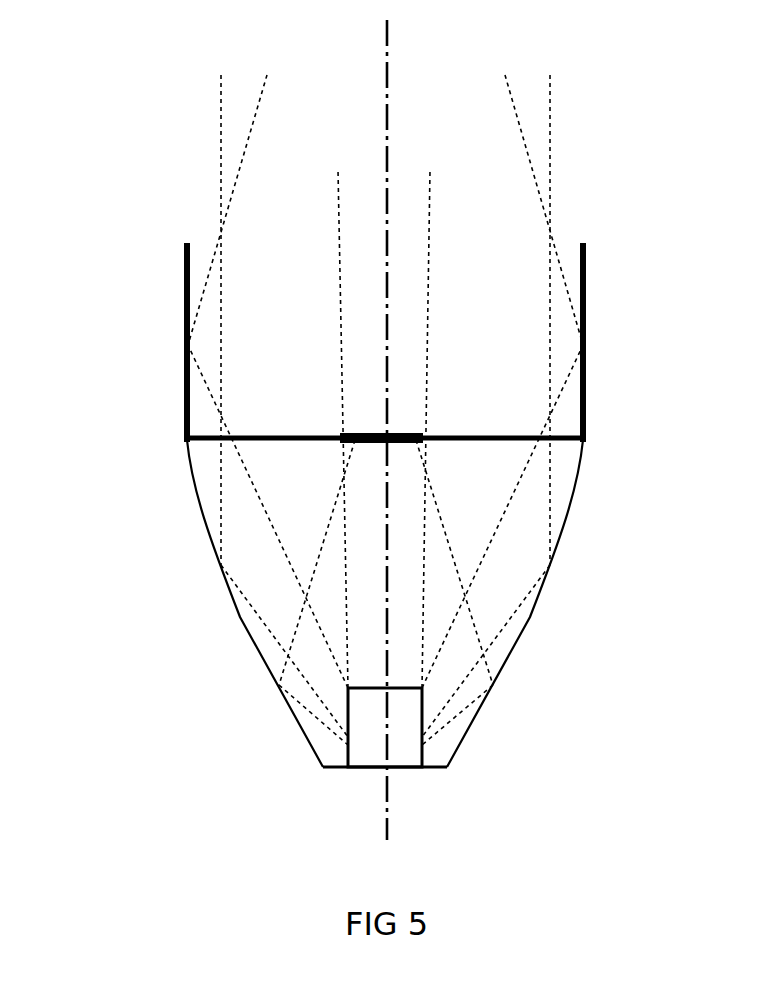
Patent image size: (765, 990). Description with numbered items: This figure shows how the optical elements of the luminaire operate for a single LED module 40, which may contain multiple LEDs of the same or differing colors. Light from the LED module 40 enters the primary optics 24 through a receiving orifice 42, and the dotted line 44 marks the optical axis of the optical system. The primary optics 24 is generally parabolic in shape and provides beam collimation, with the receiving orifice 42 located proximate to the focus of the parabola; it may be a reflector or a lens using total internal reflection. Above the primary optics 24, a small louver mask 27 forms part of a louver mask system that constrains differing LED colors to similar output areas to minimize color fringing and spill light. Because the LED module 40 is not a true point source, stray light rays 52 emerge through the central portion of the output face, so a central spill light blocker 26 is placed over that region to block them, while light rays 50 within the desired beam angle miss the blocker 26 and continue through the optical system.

The primary optics 24 is at (540, 597).
The central spill light blocker 26 is at (362, 434).
The small louver mask 27 is at (588, 362).
The LED module 40 is at (393, 763).
The receiving orifice 42 is at (410, 712).
The optical axis 44 is at (390, 35).
The light rays within the desired beam angle 50 is at (273, 533).
The stray light rays 52 is at (440, 540).